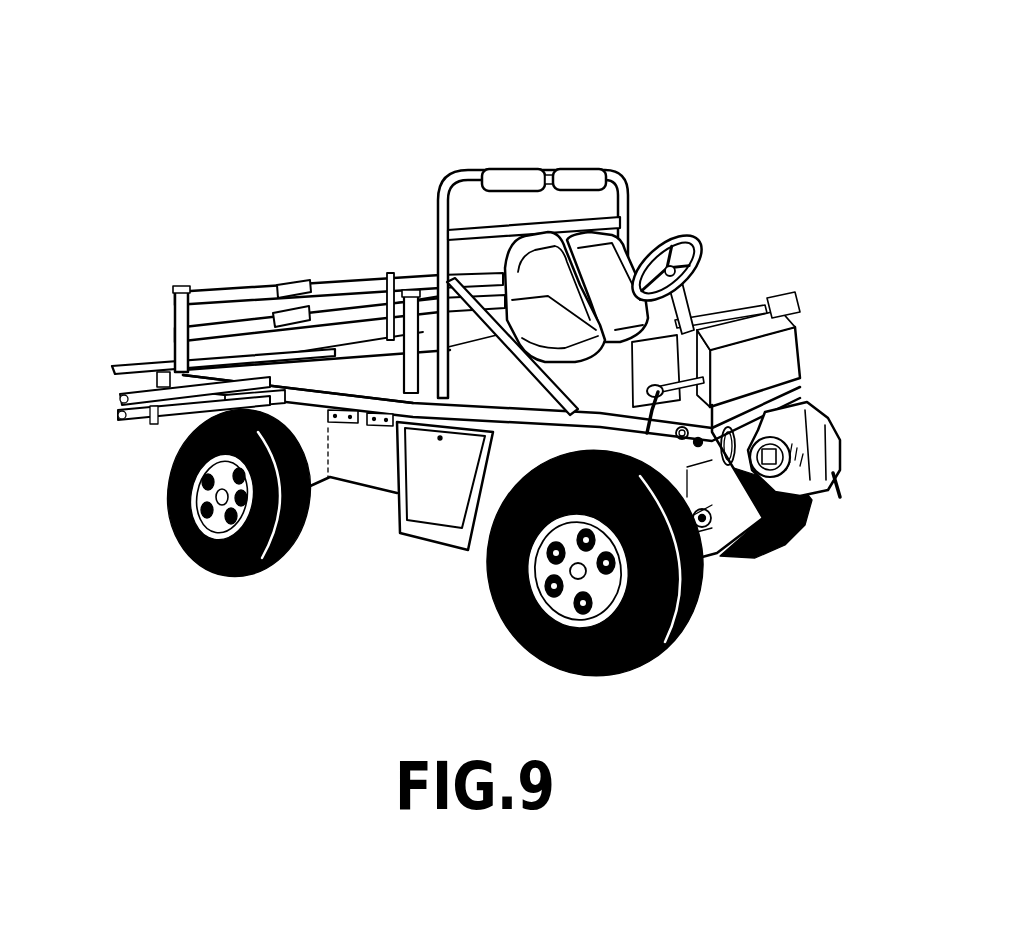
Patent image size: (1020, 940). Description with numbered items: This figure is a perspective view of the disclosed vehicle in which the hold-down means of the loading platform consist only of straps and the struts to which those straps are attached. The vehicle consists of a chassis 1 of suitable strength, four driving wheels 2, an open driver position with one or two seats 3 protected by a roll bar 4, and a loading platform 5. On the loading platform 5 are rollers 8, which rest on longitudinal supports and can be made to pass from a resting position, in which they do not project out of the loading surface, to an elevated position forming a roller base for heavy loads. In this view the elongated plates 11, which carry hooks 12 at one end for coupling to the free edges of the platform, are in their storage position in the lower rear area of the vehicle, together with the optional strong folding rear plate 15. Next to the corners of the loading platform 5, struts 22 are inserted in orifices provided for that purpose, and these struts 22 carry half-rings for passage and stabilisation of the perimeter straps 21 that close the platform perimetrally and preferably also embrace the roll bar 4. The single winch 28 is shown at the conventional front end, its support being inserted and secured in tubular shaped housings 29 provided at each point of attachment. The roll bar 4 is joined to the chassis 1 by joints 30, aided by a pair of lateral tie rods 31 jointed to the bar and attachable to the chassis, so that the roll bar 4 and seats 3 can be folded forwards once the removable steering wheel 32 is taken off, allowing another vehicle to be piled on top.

The chassis 1 is at (452, 482).
The driving wheels 2 is at (208, 567).
The seats 3 is at (543, 260).
The roll bar 4 is at (525, 170).
The loading platform 5 is at (322, 377).
The rollers 8 is at (345, 372).
The elongated plates 11 is at (160, 422).
The hooks 12 is at (117, 397).
The rear plate 15 is at (153, 358).
The perimeter straps 21 is at (277, 340).
The struts 22 is at (178, 313).
The winch 28 is at (812, 425).
The tubular shaped housings 29 is at (373, 425).
The joints 30 is at (440, 440).
The lateral tie rods 31 is at (472, 195).
The steering wheel 32 is at (697, 290).